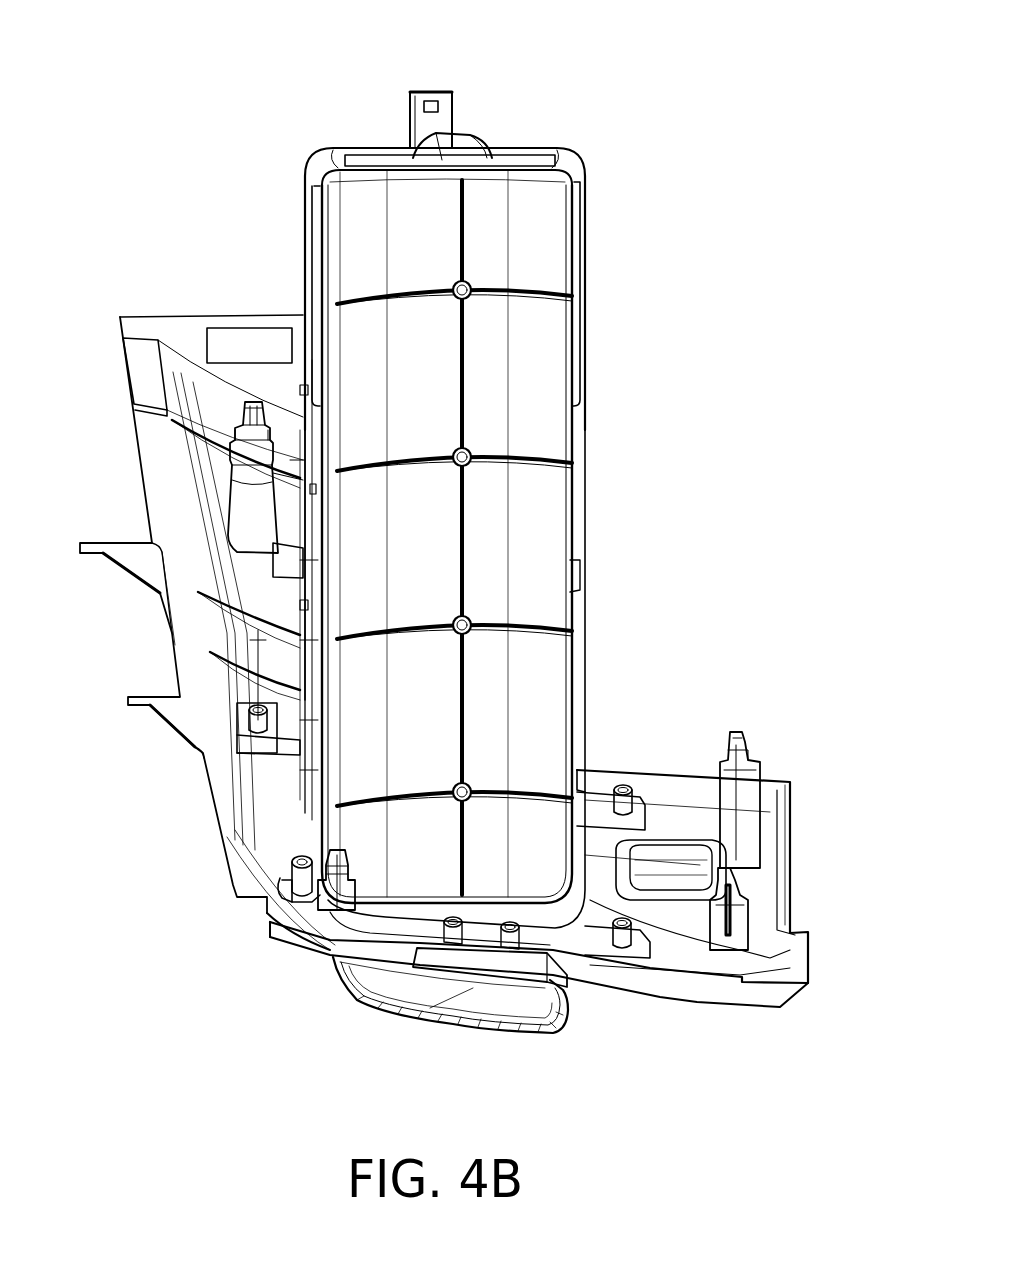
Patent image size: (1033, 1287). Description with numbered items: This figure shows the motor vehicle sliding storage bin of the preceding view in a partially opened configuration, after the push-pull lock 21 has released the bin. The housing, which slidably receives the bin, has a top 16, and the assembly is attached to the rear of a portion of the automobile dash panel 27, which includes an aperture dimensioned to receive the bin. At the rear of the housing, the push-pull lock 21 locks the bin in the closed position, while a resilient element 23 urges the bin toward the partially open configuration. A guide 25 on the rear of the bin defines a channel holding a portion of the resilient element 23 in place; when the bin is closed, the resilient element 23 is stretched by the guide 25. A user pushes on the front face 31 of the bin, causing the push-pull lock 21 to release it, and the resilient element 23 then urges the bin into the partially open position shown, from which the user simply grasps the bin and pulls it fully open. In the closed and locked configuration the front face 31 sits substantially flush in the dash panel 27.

The top 16 is at (540, 377).
The push-pull lock 21 is at (432, 92).
The resilient element 23 is at (570, 160).
The guide 25 is at (473, 145).
The dash panel 27 is at (722, 995).
The front face 31 is at (485, 1032).